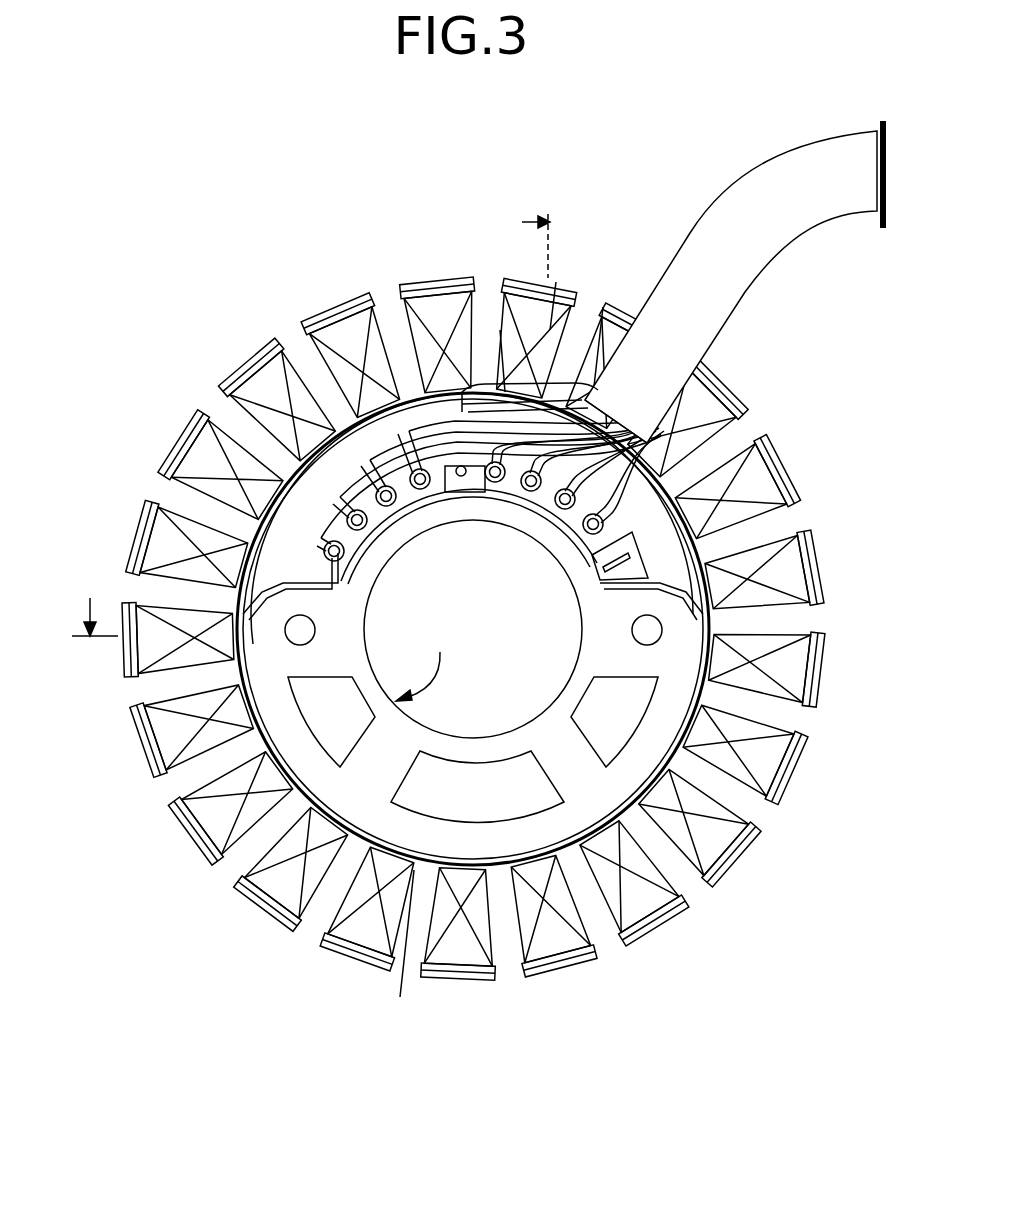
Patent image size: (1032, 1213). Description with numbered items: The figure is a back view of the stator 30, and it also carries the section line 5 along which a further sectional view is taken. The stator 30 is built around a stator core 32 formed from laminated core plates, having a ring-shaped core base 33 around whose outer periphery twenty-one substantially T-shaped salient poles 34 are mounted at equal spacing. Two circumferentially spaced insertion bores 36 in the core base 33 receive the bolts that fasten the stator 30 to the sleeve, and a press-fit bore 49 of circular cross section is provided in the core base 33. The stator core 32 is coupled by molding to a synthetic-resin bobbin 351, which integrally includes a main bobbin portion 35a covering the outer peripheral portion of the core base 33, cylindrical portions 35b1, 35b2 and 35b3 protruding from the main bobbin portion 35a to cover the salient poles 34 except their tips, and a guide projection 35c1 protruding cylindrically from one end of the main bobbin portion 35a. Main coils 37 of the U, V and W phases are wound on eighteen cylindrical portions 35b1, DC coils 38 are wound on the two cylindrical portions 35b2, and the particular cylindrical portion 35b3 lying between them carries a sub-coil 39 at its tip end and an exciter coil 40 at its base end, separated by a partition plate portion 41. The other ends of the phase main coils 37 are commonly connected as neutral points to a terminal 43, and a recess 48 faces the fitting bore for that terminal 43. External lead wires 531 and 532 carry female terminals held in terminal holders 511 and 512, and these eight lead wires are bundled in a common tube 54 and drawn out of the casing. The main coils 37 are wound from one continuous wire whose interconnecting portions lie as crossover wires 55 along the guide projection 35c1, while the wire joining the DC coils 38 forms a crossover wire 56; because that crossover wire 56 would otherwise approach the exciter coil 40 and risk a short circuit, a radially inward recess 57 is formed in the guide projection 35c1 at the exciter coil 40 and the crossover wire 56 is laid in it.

The stator 30 is at (172, 816).
The stator core 32 is at (427, 660).
The core base 33 is at (505, 748).
The salient pole 34 is at (817, 757).
The main bobbin portion 35a is at (418, 507).
The cylindrical portion 35b1 is at (265, 440).
The cylindrical portion 35b2 is at (448, 283).
The particular cylindrical portion 35b3 is at (576, 300).
The guide projection 35c1 is at (335, 898).
The bobbin 351 is at (506, 952).
The insertion bore 36 is at (302, 644).
The main coil 37 is at (345, 320).
The DC coil 38 is at (440, 300).
The sub-coil 39 is at (556, 282).
The exciter coil 40 is at (588, 372).
The partition plate portion 41 is at (606, 300).
The terminal 43 is at (595, 578).
The recess 48 is at (594, 580).
The press-fit bore 49 is at (462, 483).
The terminal holder 511 is at (553, 505).
The terminal holder 512 is at (347, 577).
The external lead wire 531 is at (782, 468).
The external lead wire 532 is at (280, 340).
The tube 54 is at (752, 262).
The crossover wire 55 is at (400, 950).
The crossover wire 56 is at (598, 392).
The recess 57 is at (498, 322).
The section line 5- 5 is at (311, 405).